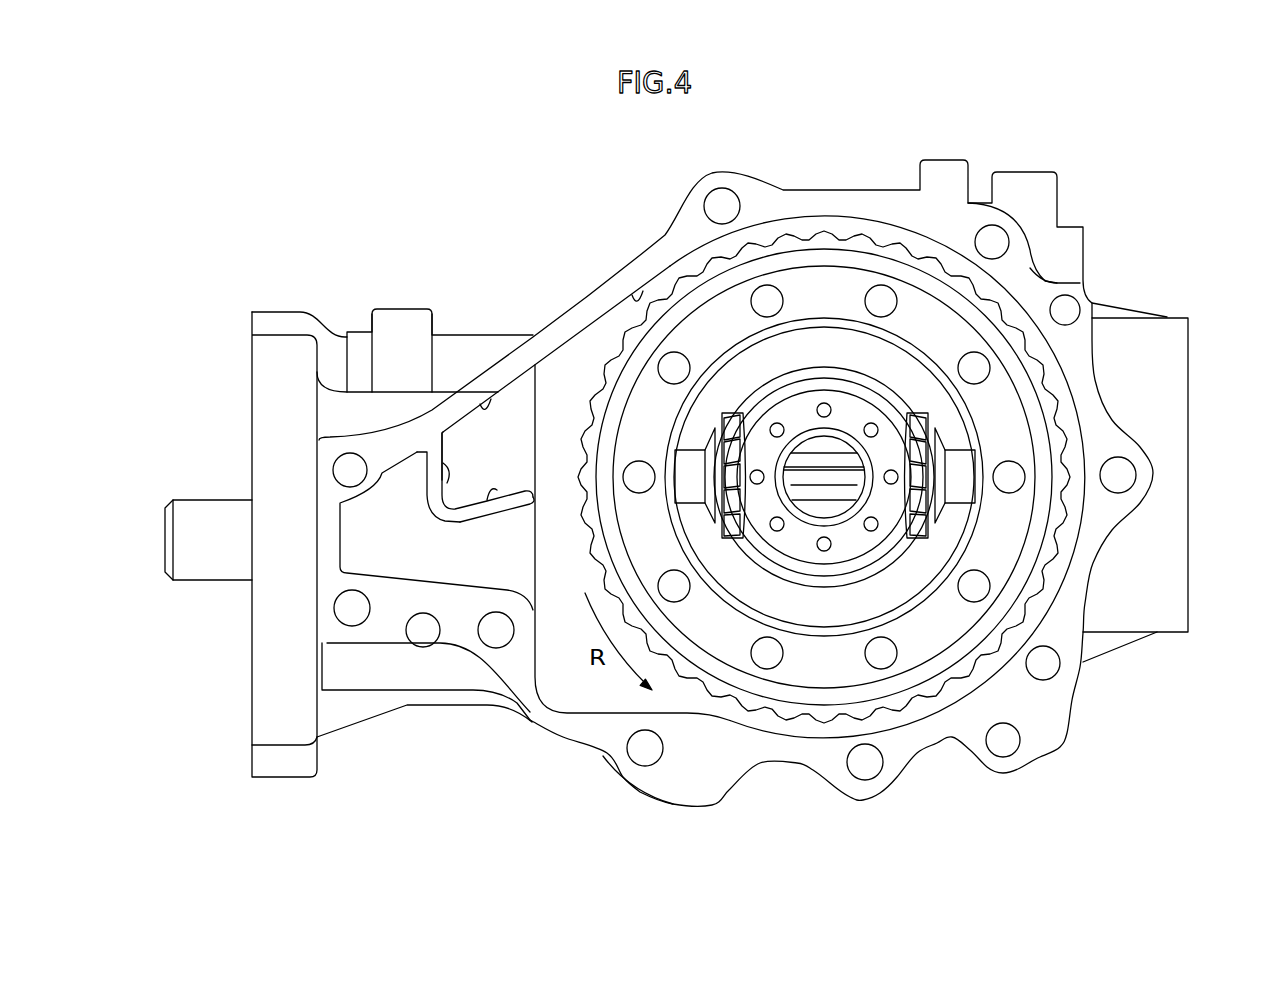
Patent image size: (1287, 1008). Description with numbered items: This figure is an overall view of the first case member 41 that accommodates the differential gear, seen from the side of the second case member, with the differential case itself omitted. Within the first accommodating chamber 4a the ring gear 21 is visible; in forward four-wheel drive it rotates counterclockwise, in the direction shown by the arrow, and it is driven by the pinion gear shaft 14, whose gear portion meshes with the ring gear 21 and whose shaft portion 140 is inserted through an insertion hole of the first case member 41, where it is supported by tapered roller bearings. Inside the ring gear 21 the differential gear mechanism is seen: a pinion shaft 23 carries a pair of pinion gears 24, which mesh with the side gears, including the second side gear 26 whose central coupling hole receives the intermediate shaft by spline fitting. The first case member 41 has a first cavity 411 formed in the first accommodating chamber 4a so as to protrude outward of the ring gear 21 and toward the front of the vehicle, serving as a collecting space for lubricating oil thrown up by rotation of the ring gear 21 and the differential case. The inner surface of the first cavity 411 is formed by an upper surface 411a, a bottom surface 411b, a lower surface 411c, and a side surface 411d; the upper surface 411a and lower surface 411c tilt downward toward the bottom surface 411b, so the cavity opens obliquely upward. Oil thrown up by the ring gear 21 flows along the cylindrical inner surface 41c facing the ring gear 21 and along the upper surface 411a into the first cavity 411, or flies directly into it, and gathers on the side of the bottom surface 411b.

The pinion gear shaft 14 is at (209, 494).
The shaft portion 140 is at (213, 572).
The ring gear 21 is at (823, 231).
The pinion shaft 23 is at (958, 467).
The pinion gears 24 is at (928, 418).
The second side gear 26 is at (858, 413).
The first case member 41 is at (648, 248).
The cylindrical inner surface 41c is at (632, 300).
The first cavity 411 is at (503, 448).
The upper surface 411a is at (483, 407).
The bottom surface 411b is at (447, 487).
The lower surface 411c is at (495, 487).
The side surface 411d is at (475, 445).
The first accommodating chamber 4a is at (603, 688).